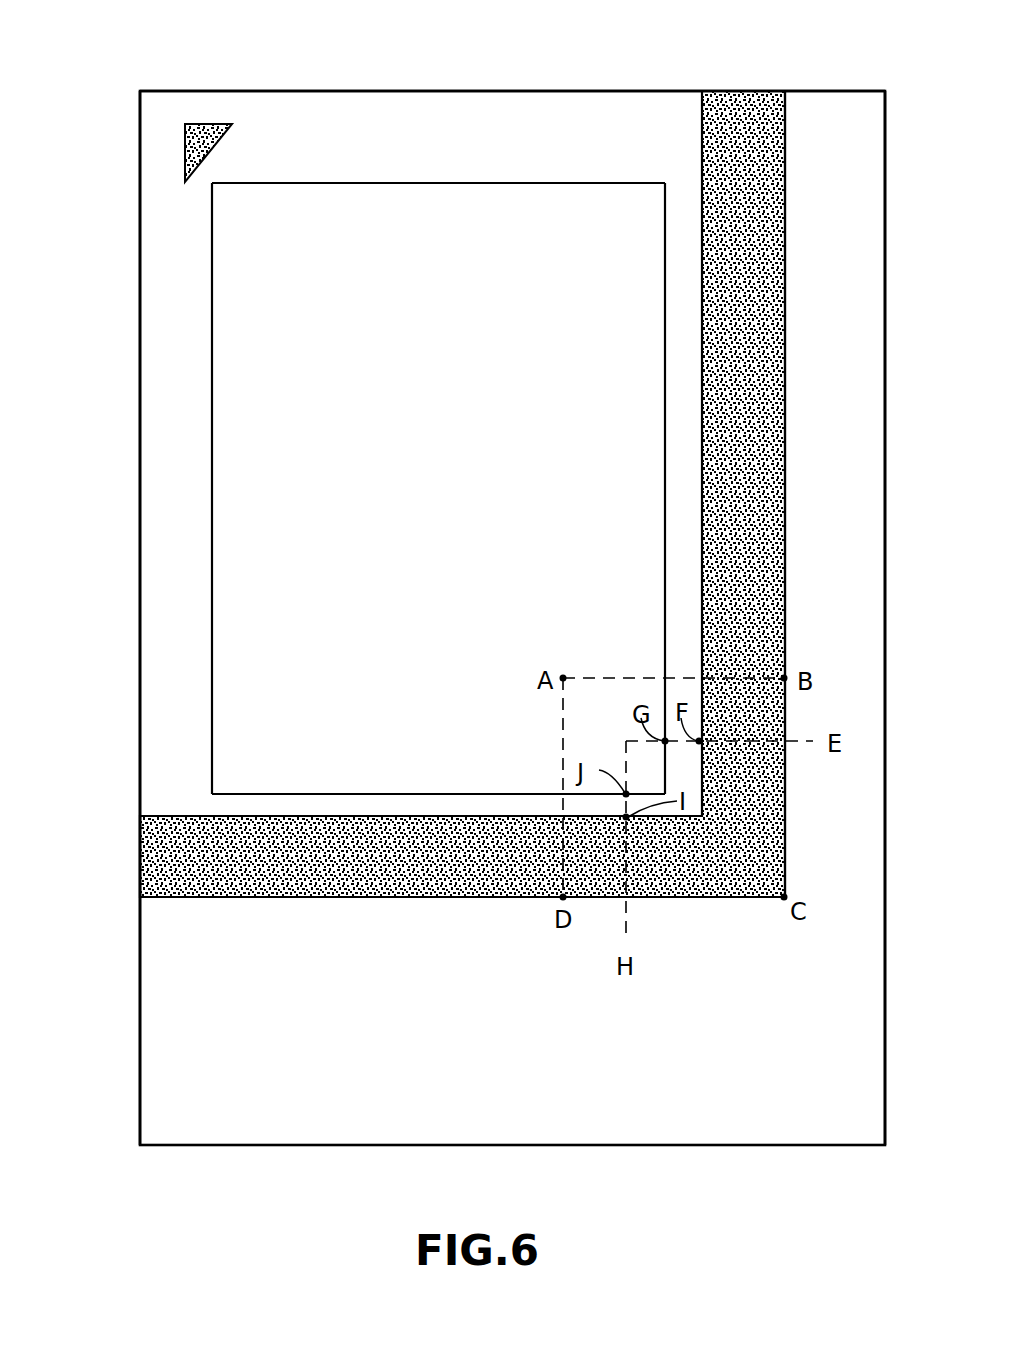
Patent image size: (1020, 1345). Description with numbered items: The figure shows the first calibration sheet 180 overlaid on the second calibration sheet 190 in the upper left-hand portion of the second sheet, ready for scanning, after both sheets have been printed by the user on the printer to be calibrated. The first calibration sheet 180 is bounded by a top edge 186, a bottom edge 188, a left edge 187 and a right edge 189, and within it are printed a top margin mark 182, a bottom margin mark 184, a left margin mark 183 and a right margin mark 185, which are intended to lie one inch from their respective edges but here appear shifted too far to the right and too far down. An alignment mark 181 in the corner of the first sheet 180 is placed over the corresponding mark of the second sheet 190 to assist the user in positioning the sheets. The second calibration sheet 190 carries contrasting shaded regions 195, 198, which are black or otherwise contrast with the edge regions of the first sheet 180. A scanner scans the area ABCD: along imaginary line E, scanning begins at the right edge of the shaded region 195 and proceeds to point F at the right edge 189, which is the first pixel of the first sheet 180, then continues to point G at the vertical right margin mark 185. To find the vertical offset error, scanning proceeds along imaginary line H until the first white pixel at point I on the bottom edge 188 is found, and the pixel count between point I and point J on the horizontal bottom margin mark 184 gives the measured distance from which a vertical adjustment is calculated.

The first calibration sheet 180 is at (562, 90).
The alignment mark 181 is at (212, 148).
The top margin mark 182 is at (363, 184).
The left margin mark 183 is at (213, 412).
The bottom margin mark 184 is at (297, 793).
The right margin mark 185 is at (665, 412).
The top edge 186 is at (363, 92).
The left edge 187 is at (139, 412).
The bottom edge 188 is at (160, 815).
The right edge 189 is at (702, 172).
The second calibration sheet 190 is at (828, 91).
The shaded region 195 is at (786, 412).
The shaded region 198 is at (325, 884).